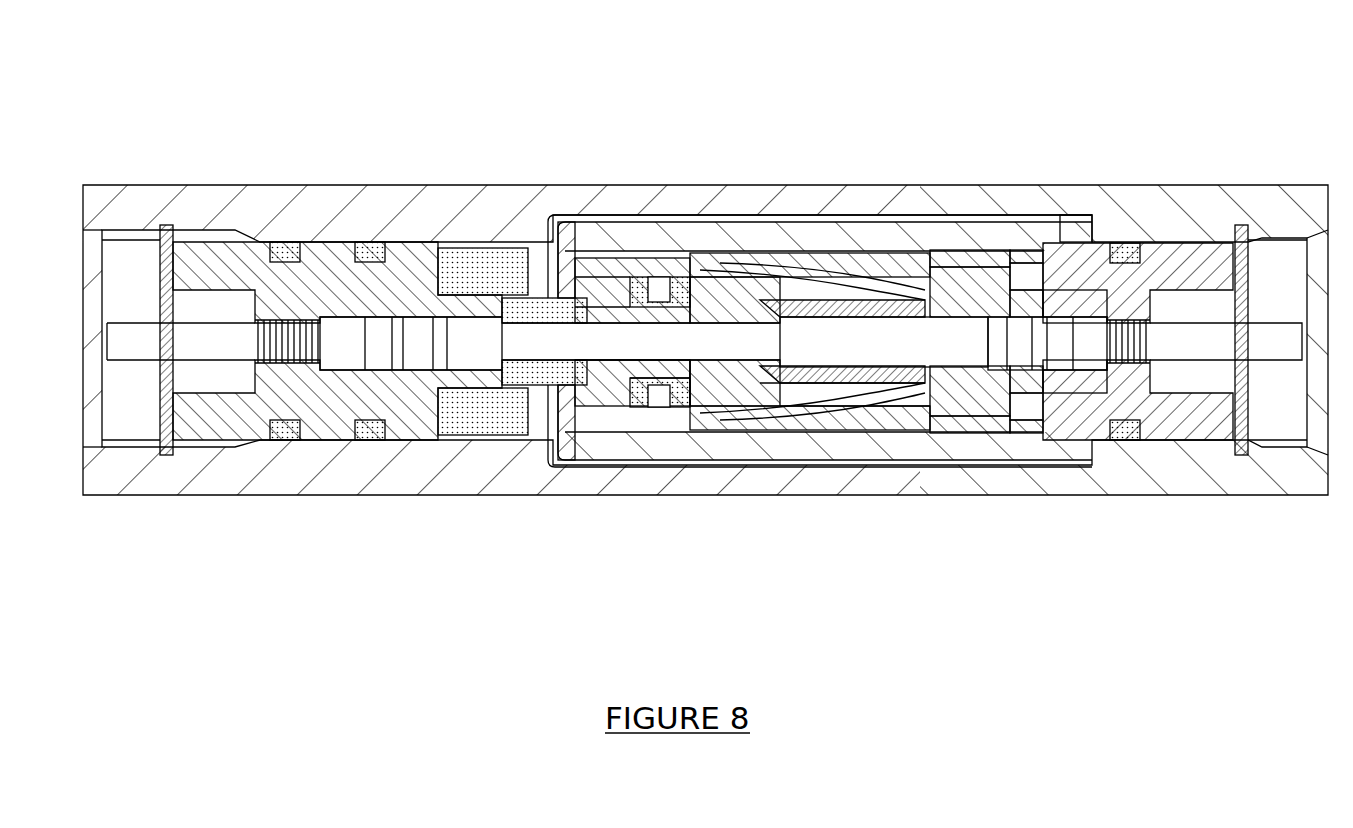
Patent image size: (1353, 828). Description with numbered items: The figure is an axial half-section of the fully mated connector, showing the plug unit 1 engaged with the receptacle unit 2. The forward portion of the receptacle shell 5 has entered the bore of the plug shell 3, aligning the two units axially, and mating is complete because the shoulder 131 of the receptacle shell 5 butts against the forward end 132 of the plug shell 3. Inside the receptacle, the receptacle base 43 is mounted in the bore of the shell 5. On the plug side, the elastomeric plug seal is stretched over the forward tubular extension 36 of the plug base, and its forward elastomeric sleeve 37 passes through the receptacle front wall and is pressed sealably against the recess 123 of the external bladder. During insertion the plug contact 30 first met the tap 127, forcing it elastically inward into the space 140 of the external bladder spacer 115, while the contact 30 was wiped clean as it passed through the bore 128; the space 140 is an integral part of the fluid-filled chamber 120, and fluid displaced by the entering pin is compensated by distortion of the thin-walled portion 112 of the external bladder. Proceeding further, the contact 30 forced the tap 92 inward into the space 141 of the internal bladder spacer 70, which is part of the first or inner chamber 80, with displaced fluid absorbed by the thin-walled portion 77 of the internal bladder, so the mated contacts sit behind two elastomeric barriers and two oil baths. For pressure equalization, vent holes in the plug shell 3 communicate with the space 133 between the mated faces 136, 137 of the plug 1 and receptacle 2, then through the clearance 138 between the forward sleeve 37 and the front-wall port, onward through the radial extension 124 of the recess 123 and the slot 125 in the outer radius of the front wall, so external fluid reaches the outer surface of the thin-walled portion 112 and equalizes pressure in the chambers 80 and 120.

The plug unit 1 is at (195, 150).
The receptacle unit 2 is at (1250, 150).
The plug shell 3 is at (287, 185).
The receptacle shell 5 is at (1205, 450).
The plug contact 30 is at (790, 342).
The forward tubular extension 36 is at (520, 298).
The forward elastomeric sleeve 37 is at (523, 370).
The receptacle base 43 is at (1090, 400).
The internal bladder spacer 70 is at (862, 290).
The thin-walled portion of internal bladder 77 is at (810, 300).
The first or inner chamber 80 is at (920, 290).
The tap 92 is at (752, 410).
The thin-walled portion of external bladder 112 is at (738, 277).
The external bladder spacer 115 is at (745, 406).
The chamber 120 is at (935, 410).
The recess 123 is at (598, 285).
The radial extension 124 is at (573, 283).
The slot 125 is at (615, 290).
The tap 127 is at (635, 380).
The bore 128 is at (478, 272).
The shoulder 131 is at (1095, 210).
The forward end 132 is at (1083, 205).
The space 133 is at (550, 270).
The mated face 136 is at (550, 437).
The mated face 137 is at (575, 393).
The clearance 138 is at (578, 392).
The space 140 is at (670, 277).
The space 141 is at (860, 410).